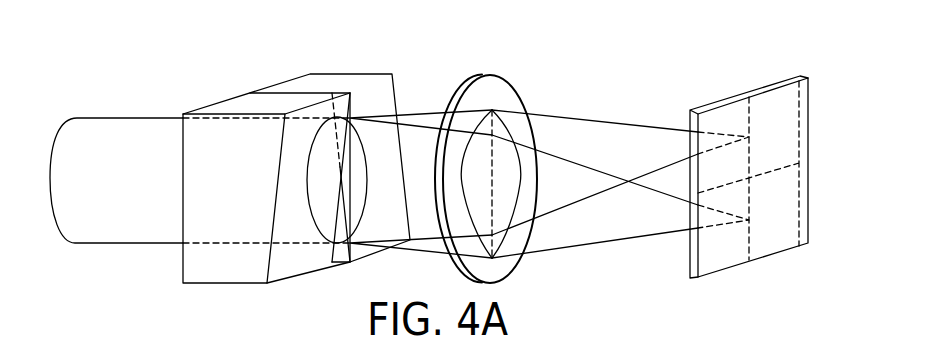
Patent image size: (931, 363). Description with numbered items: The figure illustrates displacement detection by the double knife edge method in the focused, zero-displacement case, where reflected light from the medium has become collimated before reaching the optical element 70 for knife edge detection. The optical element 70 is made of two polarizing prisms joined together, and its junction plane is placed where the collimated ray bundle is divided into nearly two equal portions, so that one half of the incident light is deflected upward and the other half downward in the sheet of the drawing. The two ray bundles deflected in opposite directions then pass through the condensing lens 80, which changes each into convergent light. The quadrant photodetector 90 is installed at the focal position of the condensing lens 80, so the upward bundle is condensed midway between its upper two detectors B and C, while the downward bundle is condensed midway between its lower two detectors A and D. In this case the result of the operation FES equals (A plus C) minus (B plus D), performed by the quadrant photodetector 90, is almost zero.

The optical element for knife edge detection 70 is at (315, 81).
The condensing lens 80 is at (497, 85).
The quadrant photodetector 90 is at (737, 107).